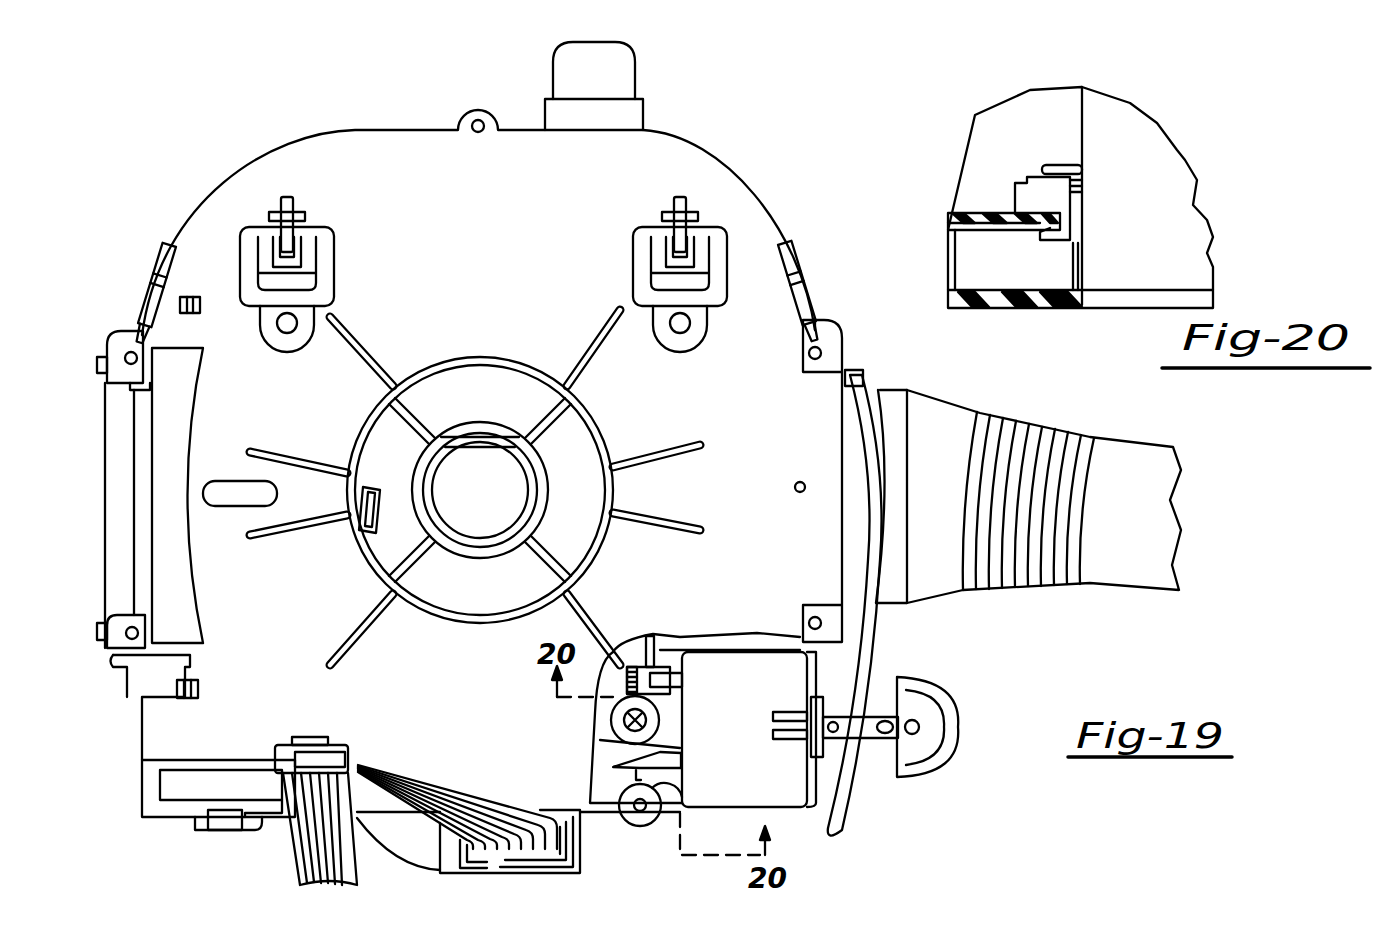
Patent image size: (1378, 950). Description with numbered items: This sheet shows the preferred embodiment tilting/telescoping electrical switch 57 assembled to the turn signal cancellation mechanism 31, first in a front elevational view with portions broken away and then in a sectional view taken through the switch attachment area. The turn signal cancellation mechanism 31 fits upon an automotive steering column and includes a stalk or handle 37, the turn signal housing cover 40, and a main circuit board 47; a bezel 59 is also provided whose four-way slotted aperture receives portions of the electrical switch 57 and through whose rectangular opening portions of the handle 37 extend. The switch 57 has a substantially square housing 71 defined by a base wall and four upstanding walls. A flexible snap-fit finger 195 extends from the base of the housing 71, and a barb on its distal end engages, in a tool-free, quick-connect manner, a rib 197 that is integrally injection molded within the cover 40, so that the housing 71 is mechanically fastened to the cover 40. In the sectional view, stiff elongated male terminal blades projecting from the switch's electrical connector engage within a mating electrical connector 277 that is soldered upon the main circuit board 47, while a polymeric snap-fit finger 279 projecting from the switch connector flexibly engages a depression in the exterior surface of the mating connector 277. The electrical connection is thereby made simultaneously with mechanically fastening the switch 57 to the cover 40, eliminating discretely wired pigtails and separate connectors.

In FIG. 19, the turn signal cancellation mechanism 31 is at (485, 251).
In FIG. 19, the stalk or handle 37 is at (1150, 493).
In FIG. 19, the cover portion of turn signal housing 40 is at (652, 830).
In FIG. 20, the cover portion of turn signal housing 40 is at (1000, 303).
In FIG. 19, the main circuit board 47 is at (637, 652).
In FIG. 20, the main circuit board 47 is at (982, 218).
In FIG. 20, the steering column tilting/telescoping electrical switch 57 is at (1098, 78).
In FIG. 19, the bezel 59 is at (862, 640).
In FIG. 19, the housing 71 is at (744, 699).
In FIG. 20, the housing 71 is at (1180, 200).
In FIG. 19, the flexible snap-fit finger 195 is at (693, 757).
In FIG. 19, the rib 197 is at (604, 840).
In FIG. 19, the mating electrical connector 277 is at (648, 668).
In FIG. 20, the mating electrical connector 277 is at (1027, 197).
In FIG. 19, the polymeric snap-fit finger 279 is at (668, 665).
In FIG. 20, the polymeric snap-fit finger 279 is at (1052, 165).